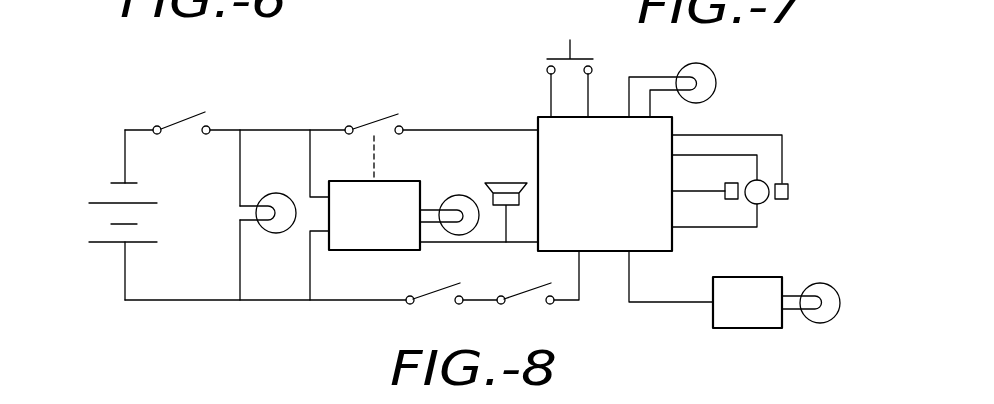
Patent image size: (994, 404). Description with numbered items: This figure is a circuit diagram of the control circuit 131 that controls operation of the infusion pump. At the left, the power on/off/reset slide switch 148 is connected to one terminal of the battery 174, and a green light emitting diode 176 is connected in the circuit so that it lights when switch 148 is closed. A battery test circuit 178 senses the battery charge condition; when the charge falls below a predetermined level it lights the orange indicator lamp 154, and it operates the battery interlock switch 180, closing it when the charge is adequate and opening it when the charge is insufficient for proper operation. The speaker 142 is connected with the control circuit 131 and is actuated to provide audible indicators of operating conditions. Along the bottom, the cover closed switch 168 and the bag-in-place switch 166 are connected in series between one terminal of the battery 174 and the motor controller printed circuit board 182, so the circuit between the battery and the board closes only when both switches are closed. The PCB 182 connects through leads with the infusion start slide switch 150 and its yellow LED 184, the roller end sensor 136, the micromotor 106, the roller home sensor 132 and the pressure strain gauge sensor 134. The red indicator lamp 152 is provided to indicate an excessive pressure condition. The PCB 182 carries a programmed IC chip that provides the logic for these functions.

The micromotor 106 is at (765, 198).
The control circuit 131 is at (430, 88).
The strain gauge sensor 132 is at (733, 330).
The first proximity sensor 134 is at (732, 202).
The second proximity sensor 136 is at (788, 191).
The speaker 142 is at (502, 183).
The power on/off/reset slide switch 148 is at (187, 118).
The infusion start slide switch 150 is at (555, 55).
The indicator lamp 152 is at (834, 287).
The indicator lamp 154 is at (462, 195).
The bag-in-place switch 166 is at (518, 305).
The cover closed switch 168 is at (427, 305).
The battery 174 is at (100, 203).
The green light emitting diode 176 is at (275, 193).
The battery test circuit 178 is at (340, 252).
The battery interlock switch 180 is at (380, 120).
The motor controller printed circuit board 182 is at (552, 128).
The yellow LED 184 is at (717, 87).